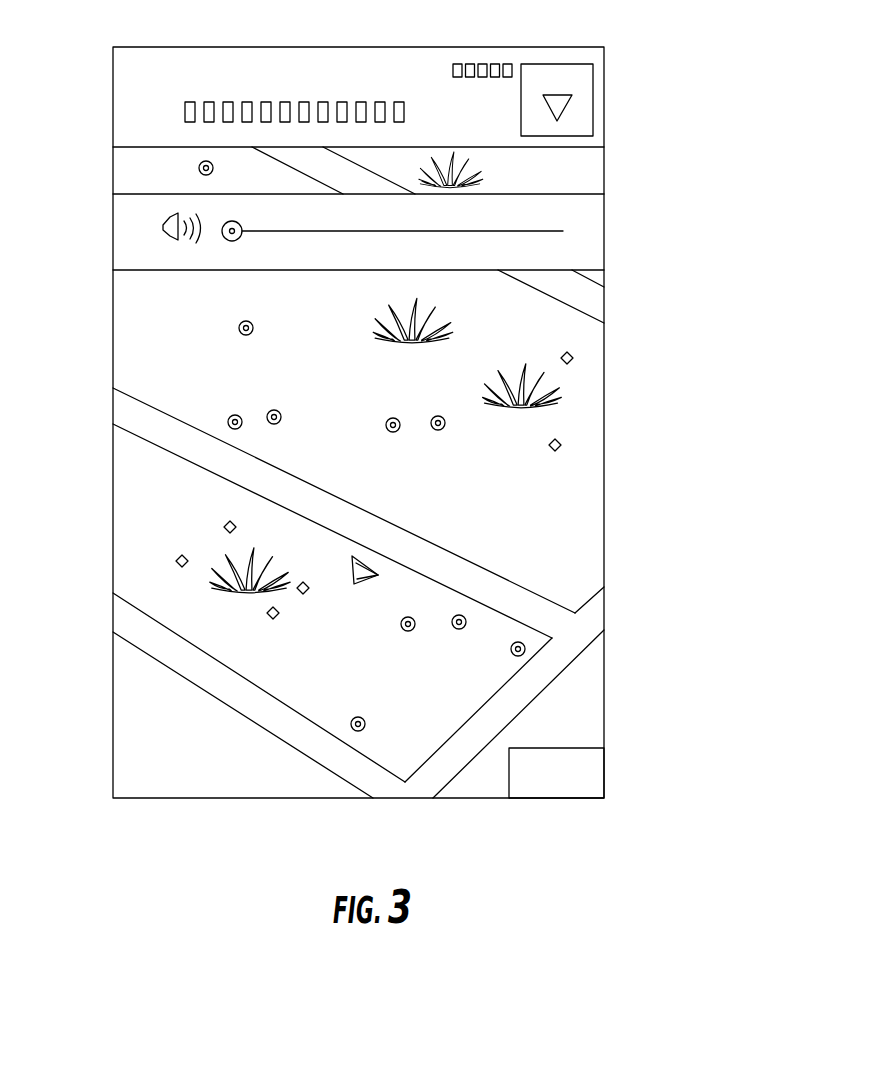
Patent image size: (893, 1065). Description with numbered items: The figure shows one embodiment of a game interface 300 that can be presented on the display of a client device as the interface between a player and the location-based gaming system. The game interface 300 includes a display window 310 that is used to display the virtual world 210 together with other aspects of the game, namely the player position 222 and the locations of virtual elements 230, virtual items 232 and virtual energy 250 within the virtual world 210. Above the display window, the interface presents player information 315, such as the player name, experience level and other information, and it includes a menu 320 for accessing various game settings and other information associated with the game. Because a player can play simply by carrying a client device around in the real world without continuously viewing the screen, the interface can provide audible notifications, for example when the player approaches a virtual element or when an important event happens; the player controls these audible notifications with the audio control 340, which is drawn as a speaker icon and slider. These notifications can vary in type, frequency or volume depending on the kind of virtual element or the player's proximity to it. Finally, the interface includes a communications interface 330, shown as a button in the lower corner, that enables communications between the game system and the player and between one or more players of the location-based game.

The game interface 300 is at (694, 136).
The player information 315 is at (125, 63).
The menu 320 is at (585, 100).
The display window 310 is at (595, 177).
The audio control 340 is at (125, 215).
The virtual world 210 is at (595, 507).
The virtual elements 230 is at (378, 320).
The virtual energy 250 is at (254, 331).
The virtual items 232 is at (222, 527).
The player position 222 is at (350, 582).
The communications interface 330 is at (597, 777).